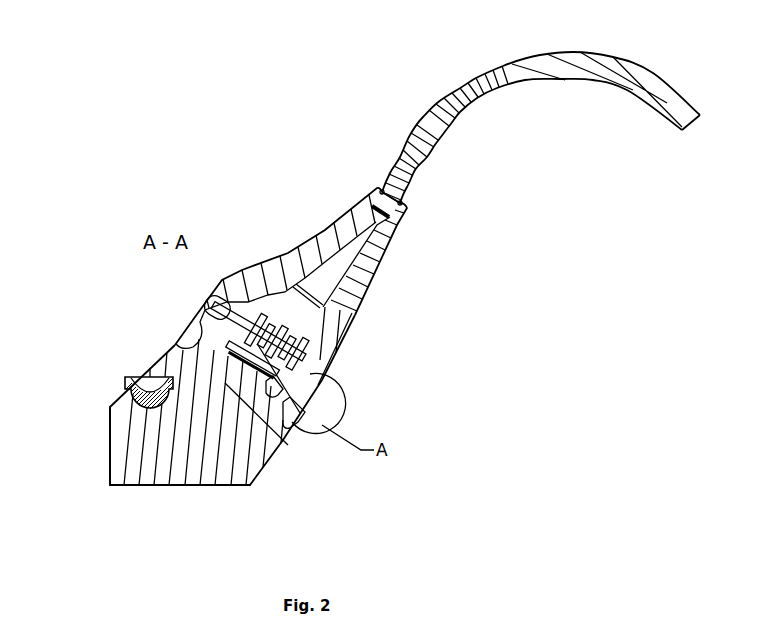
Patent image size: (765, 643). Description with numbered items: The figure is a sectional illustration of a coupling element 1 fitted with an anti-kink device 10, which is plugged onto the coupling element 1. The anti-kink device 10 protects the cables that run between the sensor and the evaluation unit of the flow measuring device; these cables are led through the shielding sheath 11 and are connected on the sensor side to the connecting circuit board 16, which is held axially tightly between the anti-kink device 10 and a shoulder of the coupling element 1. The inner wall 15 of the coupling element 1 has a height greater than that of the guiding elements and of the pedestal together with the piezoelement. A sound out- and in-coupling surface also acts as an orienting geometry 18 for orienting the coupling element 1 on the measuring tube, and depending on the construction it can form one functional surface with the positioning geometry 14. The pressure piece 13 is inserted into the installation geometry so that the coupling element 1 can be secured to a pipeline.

The coupling element 1 is at (147, 463).
The anti-kink device 10 is at (293, 265).
The shielding sheath 11 is at (440, 113).
The pressure piece 13 is at (127, 387).
The positioning geometry 14 is at (110, 442).
The inner wall 15 is at (298, 400).
The connecting circuit board 16 is at (302, 372).
The orienting geometry 18 is at (215, 484).